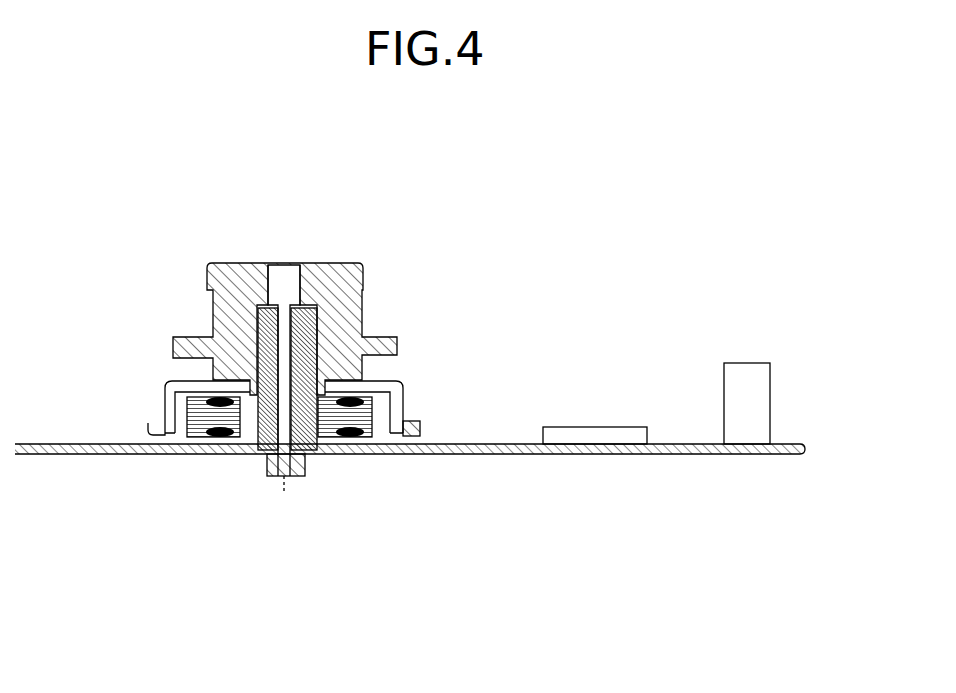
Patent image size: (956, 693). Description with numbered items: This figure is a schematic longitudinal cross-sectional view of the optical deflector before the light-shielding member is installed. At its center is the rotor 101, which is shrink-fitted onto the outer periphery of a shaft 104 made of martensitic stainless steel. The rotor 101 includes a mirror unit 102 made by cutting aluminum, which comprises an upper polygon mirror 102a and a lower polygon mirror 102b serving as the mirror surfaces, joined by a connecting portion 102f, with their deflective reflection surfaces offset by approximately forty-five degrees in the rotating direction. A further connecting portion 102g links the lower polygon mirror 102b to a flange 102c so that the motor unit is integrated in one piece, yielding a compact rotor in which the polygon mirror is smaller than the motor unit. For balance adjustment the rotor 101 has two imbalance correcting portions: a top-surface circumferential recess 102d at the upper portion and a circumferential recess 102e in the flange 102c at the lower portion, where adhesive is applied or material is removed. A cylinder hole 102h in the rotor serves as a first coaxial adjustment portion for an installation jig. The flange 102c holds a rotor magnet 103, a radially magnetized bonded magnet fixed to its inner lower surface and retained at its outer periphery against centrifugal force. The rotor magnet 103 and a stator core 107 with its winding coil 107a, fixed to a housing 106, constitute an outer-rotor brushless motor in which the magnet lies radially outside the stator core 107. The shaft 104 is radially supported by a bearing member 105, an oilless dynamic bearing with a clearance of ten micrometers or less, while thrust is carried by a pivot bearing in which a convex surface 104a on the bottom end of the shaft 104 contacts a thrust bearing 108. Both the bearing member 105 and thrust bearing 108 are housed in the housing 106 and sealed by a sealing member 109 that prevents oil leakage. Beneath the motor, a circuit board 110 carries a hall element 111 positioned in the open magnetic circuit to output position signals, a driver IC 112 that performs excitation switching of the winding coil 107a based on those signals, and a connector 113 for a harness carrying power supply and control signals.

The rotor 101 is at (300, 239).
The mirror unit 102 is at (330, 290).
The polygon mirror 102a is at (352, 288).
The polygon mirror 102b is at (398, 343).
The flange 102c is at (403, 392).
The top-surface circumferential recess 102d is at (225, 263).
The circumferential recess 102e is at (418, 425).
The connecting portion 102f is at (363, 303).
The connecting portion 102g is at (175, 358).
The cylinder hole 102h is at (262, 264).
The rotor magnet 103 is at (407, 405).
The shaft 104 is at (288, 300).
The convex surface 104a is at (278, 476).
The bearing member 105 is at (338, 445).
The housing 106 is at (312, 447).
The stator core 107 is at (197, 430).
The winding coil 107a is at (218, 432).
The thrust bearing 108 is at (303, 474).
The sealing member 109 is at (262, 350).
The circuit board 110 is at (515, 447).
The hall element 111 is at (407, 442).
The driver IC 112 is at (597, 438).
The connector 113 is at (745, 422).